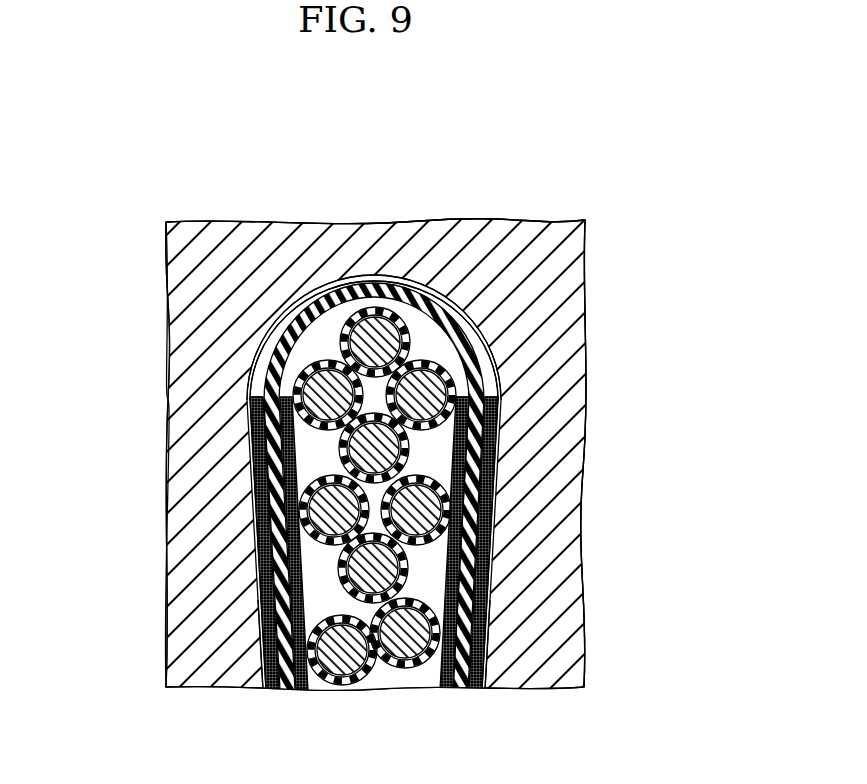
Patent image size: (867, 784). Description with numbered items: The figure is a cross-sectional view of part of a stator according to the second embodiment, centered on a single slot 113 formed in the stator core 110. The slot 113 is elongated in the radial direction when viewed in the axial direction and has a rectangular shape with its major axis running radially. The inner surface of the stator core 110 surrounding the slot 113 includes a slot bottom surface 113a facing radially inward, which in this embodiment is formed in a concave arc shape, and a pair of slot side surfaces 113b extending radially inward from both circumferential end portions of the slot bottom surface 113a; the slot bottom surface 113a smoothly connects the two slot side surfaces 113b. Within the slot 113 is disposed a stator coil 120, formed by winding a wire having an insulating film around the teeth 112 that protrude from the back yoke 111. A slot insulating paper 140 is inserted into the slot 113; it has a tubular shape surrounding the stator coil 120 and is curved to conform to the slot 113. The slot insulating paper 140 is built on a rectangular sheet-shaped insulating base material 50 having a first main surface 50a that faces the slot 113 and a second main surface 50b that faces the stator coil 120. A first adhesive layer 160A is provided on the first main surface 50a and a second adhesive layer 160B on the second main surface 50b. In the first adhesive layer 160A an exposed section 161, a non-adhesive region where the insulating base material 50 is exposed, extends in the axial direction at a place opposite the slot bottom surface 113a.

The stator core 110 is at (596, 207).
The back yoke 111 is at (433, 226).
The teeth 112 is at (190, 457).
The slot 113 is at (490, 545).
The slot bottom surface 113a is at (330, 288).
The slot side surfaces 113b is at (272, 628).
The stator coil 120 is at (330, 584).
The slot insulating paper 140 is at (270, 336).
The insulating base material 50 is at (355, 292).
The first main surface 50a is at (266, 360).
The second main surface 50b is at (284, 424).
The first adhesive layer 160A is at (490, 466).
The second adhesive layer 160B is at (460, 443).
The exposed section 161 is at (462, 396).